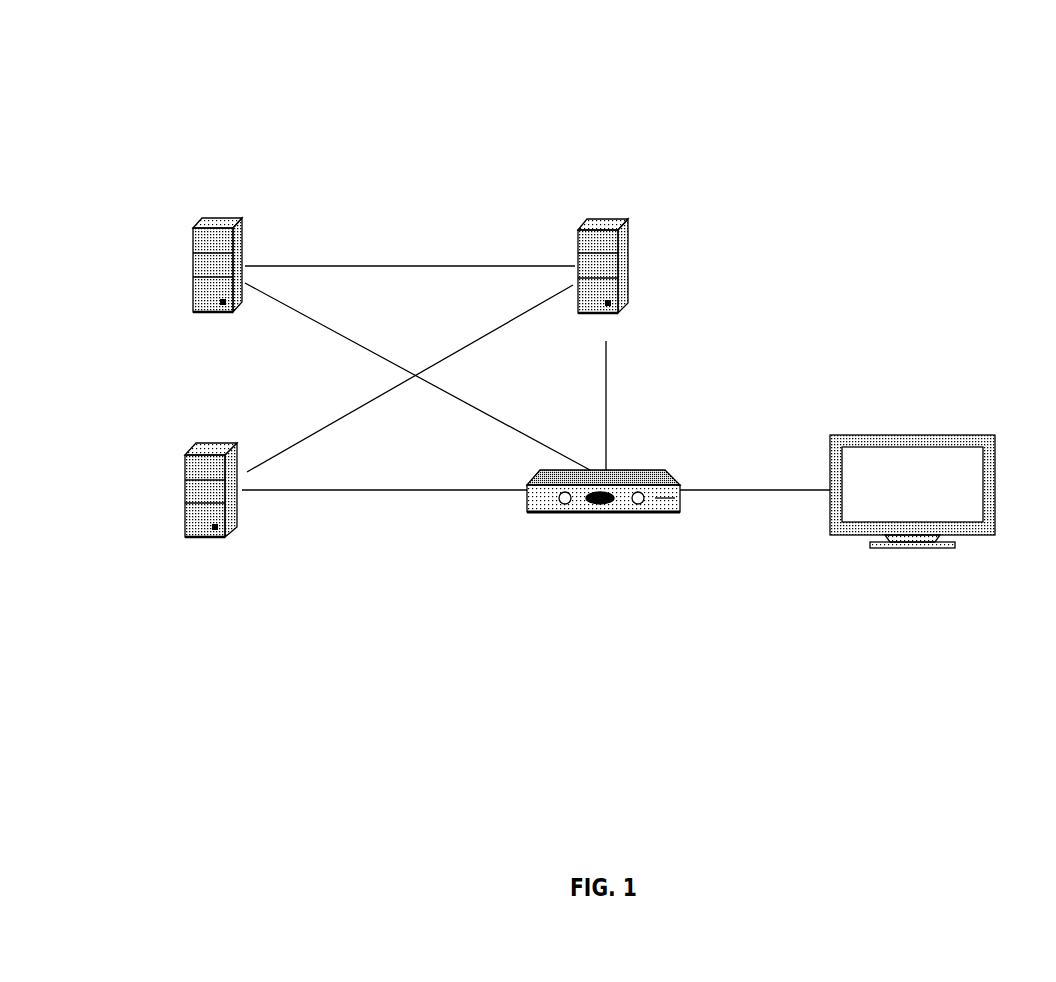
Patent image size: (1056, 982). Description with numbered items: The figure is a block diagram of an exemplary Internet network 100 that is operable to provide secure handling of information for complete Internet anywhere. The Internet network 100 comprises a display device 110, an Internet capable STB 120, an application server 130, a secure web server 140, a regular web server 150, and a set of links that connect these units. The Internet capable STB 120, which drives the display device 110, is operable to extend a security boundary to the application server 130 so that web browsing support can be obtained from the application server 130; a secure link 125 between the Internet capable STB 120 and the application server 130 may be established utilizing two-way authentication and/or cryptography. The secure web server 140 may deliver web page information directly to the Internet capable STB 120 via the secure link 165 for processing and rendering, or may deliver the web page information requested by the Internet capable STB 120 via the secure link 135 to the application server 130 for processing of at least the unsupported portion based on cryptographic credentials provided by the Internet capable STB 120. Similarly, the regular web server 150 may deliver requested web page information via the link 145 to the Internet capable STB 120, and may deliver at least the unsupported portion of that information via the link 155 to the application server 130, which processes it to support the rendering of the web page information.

The Internet network 100 is at (120, 86).
The display device 110 is at (997, 455).
The Internet capable STB 120 is at (682, 483).
The secure link 125 is at (607, 417).
The application server 130 is at (629, 228).
The secure link 135 is at (396, 266).
The secure web server 140 is at (243, 228).
The link 145 is at (410, 490).
The regular web server 150 is at (236, 453).
The link 155 is at (342, 418).
The secure link 165 is at (407, 365).